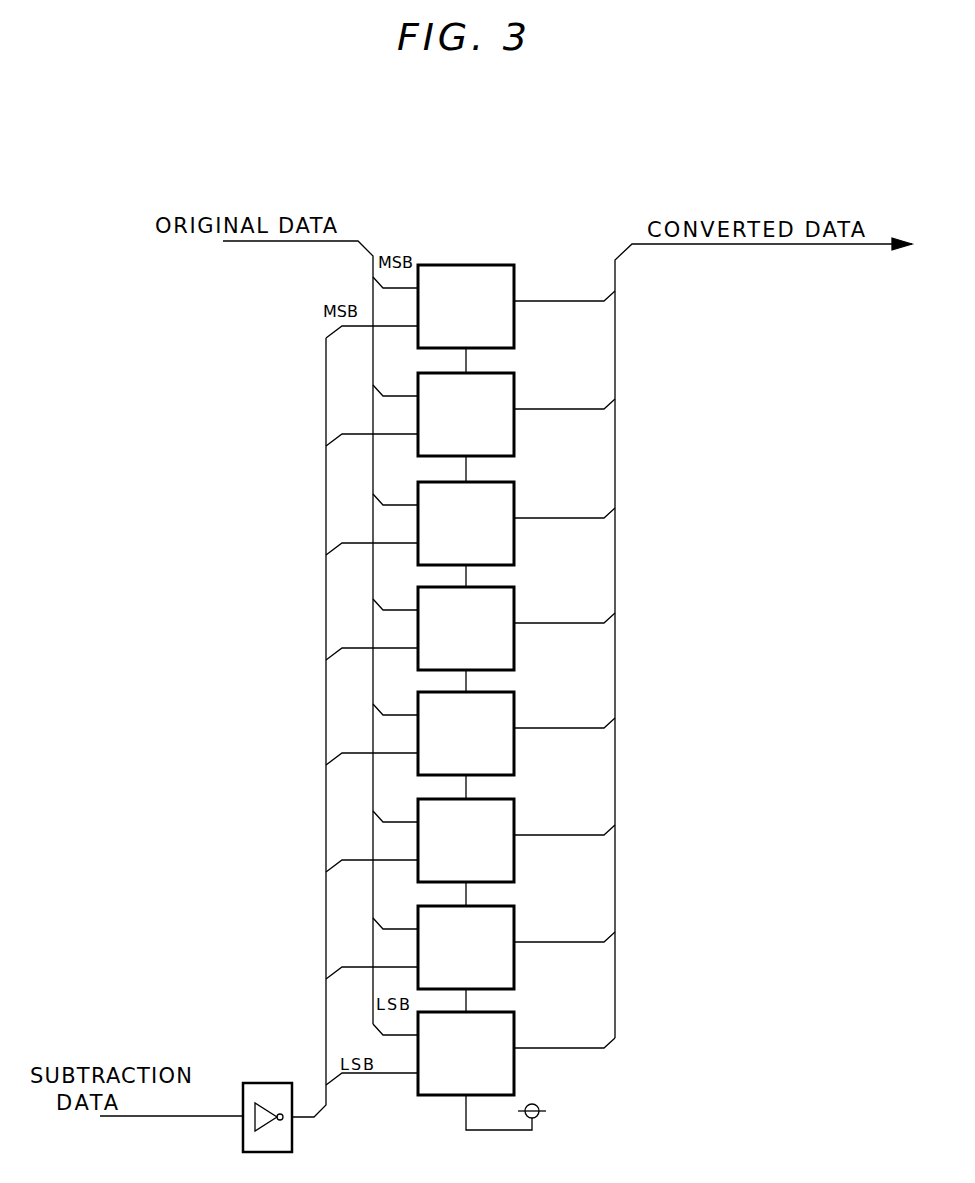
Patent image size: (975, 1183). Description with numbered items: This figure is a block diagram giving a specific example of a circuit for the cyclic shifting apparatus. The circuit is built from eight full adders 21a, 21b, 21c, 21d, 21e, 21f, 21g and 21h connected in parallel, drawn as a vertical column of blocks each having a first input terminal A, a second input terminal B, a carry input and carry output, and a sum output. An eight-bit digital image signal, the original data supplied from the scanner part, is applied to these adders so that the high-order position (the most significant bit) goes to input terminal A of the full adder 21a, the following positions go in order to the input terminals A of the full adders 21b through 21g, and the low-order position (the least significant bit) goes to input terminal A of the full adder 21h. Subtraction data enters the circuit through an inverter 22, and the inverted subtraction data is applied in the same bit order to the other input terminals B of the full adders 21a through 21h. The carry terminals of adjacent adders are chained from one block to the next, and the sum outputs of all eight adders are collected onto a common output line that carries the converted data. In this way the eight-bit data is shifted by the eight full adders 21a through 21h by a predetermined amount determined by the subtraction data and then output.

The full adder 21a is at (492, 264).
The full adder 21b is at (508, 372).
The full adder 21c is at (508, 481).
The full adder 21d is at (508, 586).
The full adder 21e is at (508, 691).
The full adder 21f is at (508, 798).
The full adder 21g is at (508, 905).
The full adder 21h is at (508, 1011).
The inverter 22 is at (262, 1083).